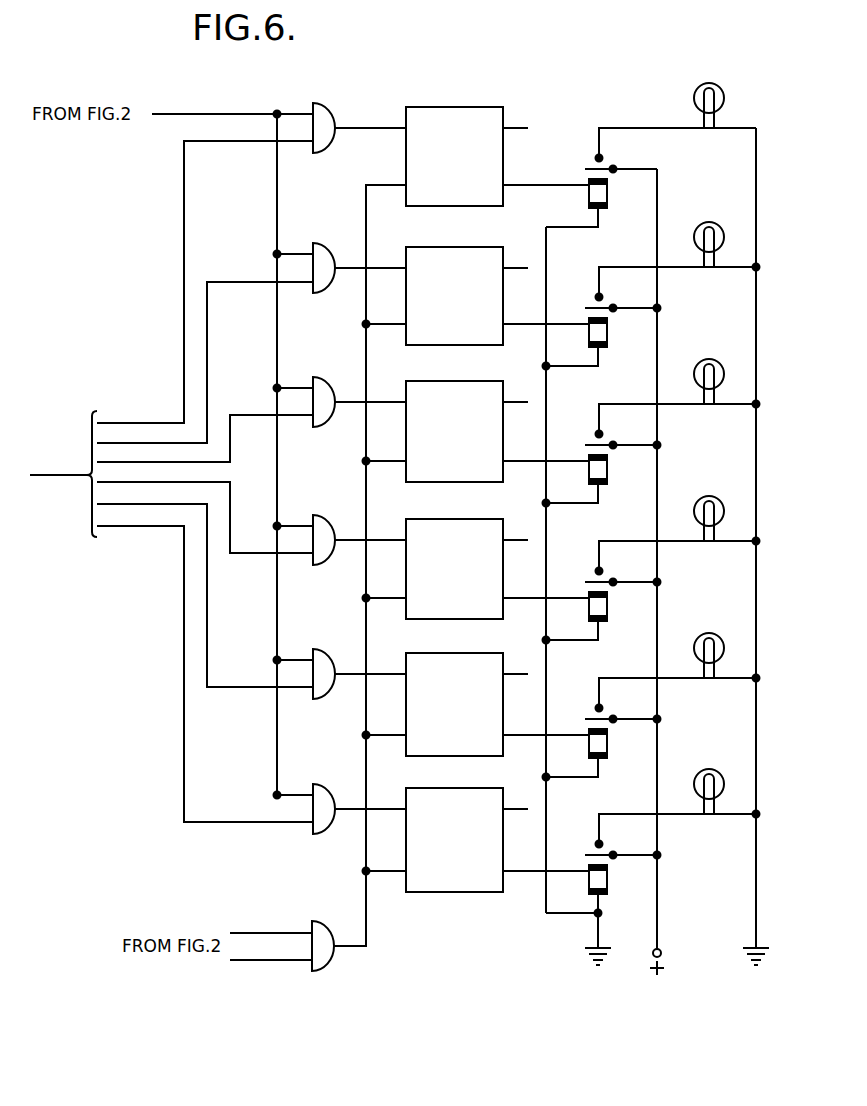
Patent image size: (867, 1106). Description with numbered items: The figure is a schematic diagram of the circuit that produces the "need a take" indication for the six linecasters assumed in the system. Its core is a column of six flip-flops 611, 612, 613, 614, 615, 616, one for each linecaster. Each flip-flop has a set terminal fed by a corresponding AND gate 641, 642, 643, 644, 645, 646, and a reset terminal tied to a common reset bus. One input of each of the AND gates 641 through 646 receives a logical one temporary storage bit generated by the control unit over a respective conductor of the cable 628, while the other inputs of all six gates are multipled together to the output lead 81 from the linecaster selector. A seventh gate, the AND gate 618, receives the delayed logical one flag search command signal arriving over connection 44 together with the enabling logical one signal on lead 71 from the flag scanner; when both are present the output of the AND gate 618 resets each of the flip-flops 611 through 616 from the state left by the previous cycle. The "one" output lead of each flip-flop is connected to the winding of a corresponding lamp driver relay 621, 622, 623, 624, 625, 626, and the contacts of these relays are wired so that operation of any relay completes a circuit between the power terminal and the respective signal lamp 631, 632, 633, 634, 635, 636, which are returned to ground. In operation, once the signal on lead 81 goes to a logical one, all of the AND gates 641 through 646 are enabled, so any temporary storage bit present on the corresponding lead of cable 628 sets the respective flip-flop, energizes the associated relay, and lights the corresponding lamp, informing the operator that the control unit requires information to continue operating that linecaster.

The output lead 81 is at (193, 112).
The connection 44 is at (256, 932).
The lead 71 is at (263, 962).
The cable 628 is at (53, 474).
The flip-flop 611 is at (452, 111).
The flip-flop 612 is at (452, 251).
The flip-flop 613 is at (452, 385).
The flip-flop 614 is at (452, 523).
The flip-flop 615 is at (452, 657).
The flip-flop 616 is at (452, 792).
The AND gate 618 is at (321, 961).
The AND gate 641 is at (328, 116).
The AND gate 642 is at (324, 256).
The AND gate 643 is at (324, 390).
The AND gate 644 is at (336, 513).
The AND gate 645 is at (336, 647).
The AND gate 646 is at (336, 782).
The lamp driver relay 621 is at (583, 178).
The lamp driver relay 622 is at (583, 317).
The lamp driver relay 623 is at (583, 454).
The lamp driver relay 624 is at (583, 591).
The lamp driver relay 625 is at (583, 728).
The lamp driver relay 626 is at (583, 864).
The signal lamp 631 is at (710, 83).
The signal lamp 632 is at (710, 222).
The signal lamp 633 is at (710, 359).
The signal lamp 634 is at (710, 496).
The signal lamp 635 is at (710, 633).
The signal lamp 636 is at (710, 769).